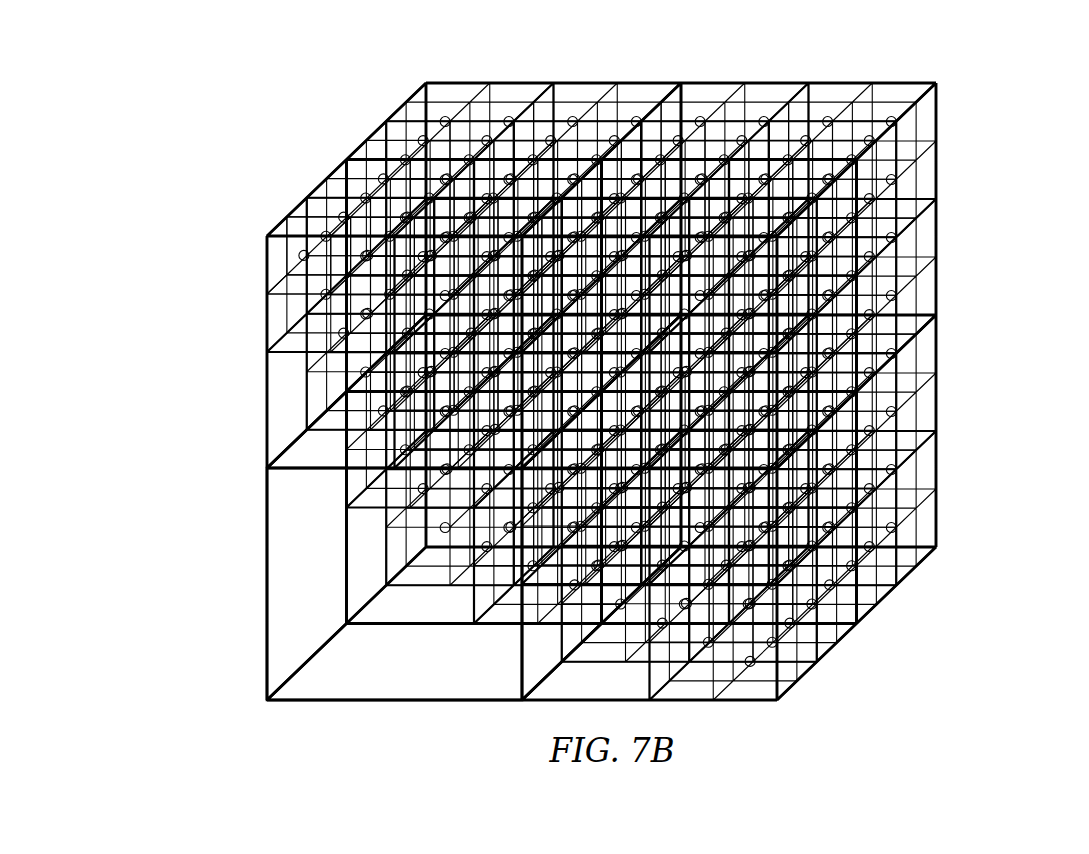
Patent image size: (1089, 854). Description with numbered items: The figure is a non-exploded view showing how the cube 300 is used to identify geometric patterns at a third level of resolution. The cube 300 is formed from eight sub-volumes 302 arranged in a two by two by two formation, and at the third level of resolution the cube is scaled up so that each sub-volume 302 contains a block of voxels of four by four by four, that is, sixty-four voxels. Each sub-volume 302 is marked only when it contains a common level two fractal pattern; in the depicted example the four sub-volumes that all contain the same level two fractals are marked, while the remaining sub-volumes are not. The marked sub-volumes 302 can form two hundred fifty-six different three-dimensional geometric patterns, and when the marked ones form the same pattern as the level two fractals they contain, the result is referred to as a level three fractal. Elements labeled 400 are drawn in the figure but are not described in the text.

The cube 300 is at (669, 391).
The sub-volume 302 is at (599, 383).
The leaf cell / sub-octant node 400 is at (296, 206).